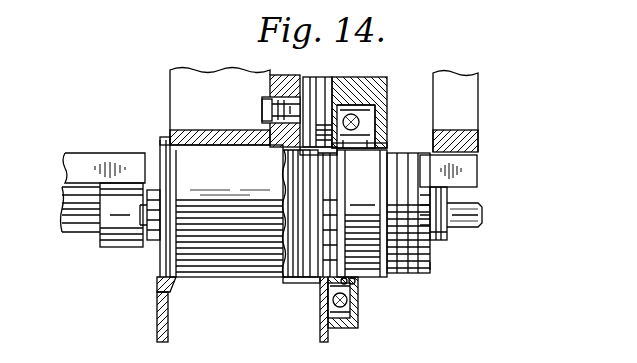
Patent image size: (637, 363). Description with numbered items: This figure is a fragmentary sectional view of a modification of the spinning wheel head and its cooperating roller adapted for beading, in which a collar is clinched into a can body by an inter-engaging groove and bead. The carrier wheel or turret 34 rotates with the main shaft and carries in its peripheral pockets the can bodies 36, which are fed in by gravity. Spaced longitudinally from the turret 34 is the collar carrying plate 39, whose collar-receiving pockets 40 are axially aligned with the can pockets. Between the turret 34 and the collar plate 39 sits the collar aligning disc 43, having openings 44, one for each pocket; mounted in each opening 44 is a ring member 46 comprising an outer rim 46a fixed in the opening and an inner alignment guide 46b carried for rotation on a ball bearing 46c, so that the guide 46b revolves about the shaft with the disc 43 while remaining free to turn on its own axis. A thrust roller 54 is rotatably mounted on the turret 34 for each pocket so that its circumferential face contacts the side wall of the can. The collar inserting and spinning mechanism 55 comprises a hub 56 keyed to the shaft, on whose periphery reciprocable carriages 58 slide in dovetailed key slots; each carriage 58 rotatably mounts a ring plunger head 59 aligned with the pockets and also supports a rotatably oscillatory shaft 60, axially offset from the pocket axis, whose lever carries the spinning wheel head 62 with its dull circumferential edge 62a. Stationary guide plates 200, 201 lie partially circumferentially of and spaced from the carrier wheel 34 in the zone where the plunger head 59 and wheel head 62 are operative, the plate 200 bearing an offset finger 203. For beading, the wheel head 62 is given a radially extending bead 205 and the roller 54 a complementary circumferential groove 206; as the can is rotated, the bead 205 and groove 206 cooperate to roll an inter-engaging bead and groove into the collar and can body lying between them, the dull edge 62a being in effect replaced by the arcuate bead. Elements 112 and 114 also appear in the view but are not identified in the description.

The carrier wheel or turret 34 is at (291, 75).
The can body 36 is at (243, 186).
The collar carrying plate 39 is at (387, 94).
The collar-receiving pocket 40 is at (383, 146).
The collar aligning disc 43 is at (355, 78).
The opening 44 is at (354, 113).
The ring member 46 is at (356, 124).
The outer rim 46a is at (336, 304).
The inner alignment guide 46b is at (353, 283).
The ball bearing 46c is at (355, 299).
The thrust roller 54 is at (266, 85).
The collar inserting and spinning mechanism 55 is at (440, 269).
The hub 56 is at (470, 112).
The reciprocable carriage 58 is at (470, 178).
The ring plunger head 59 is at (397, 276).
The rotatably oscillatory shaft 60 is at (470, 228).
The spinning wheel head 62 is at (339, 192).
The dull circumferential edge 62a is at (292, 175).
The input shaft gear 112 is at (84, 229).
The splined shaft 114 is at (106, 157).
The guide plate 200 is at (169, 325).
The guide plate 201 is at (324, 315).
The offset finger 203 is at (174, 290).
The bead 205 is at (318, 176).
The groove 206 is at (316, 77).